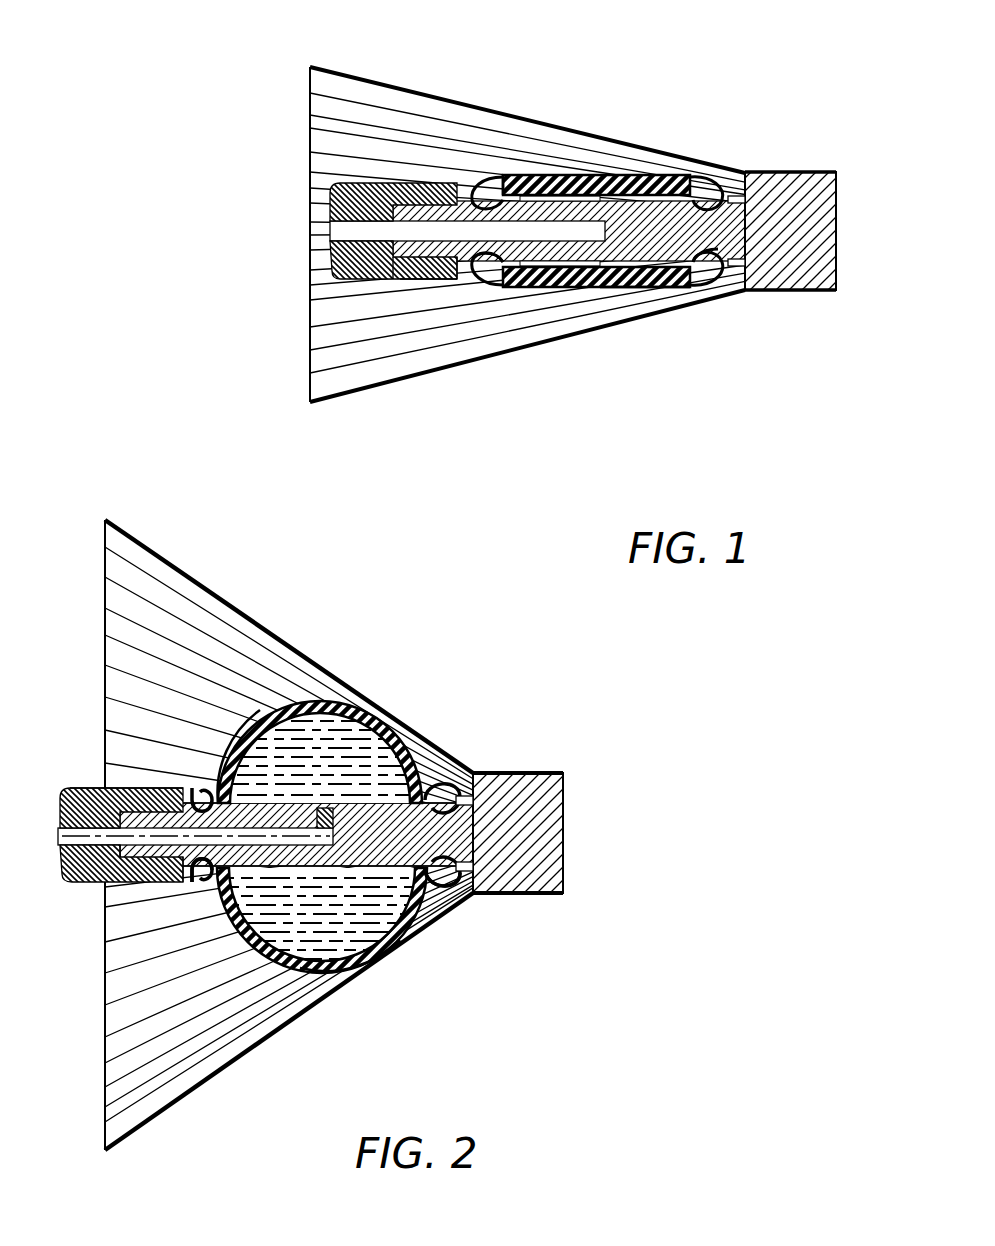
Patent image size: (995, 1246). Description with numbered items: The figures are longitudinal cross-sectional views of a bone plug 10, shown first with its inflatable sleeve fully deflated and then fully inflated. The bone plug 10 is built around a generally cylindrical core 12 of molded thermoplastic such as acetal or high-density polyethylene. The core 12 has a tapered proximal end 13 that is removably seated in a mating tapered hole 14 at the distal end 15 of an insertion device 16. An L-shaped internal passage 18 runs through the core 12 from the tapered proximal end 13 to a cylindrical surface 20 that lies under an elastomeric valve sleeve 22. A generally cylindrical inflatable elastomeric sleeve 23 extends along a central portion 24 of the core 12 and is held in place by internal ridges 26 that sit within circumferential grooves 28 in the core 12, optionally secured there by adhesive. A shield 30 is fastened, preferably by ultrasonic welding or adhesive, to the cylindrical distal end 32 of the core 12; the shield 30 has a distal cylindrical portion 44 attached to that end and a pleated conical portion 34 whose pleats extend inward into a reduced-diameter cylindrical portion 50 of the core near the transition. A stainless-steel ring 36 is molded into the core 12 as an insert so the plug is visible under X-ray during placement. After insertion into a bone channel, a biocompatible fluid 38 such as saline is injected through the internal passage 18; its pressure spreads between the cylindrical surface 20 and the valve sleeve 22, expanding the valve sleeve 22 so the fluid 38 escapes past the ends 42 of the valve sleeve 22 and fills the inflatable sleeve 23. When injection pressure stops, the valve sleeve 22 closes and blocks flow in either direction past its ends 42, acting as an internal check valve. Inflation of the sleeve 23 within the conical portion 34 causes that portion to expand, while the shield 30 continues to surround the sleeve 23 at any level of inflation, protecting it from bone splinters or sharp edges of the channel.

In FIG. 1, the bone plug 10 is at (647, 412).
In FIG. 2, the bone plug 10 is at (414, 1052).
In FIG. 1, the core 12 is at (848, 218).
In FIG. 2, the core 12 is at (577, 822).
In FIG. 1, the tapered proximal end 13 is at (405, 280).
In FIG. 2, the tapered proximal end 13 is at (135, 883).
In FIG. 1, the tapered hole 14 is at (398, 183).
In FIG. 2, the tapered hole 14 is at (130, 790).
In FIG. 1, the distal end of insertion device 15 is at (465, 282).
In FIG. 2, the distal end of insertion device 15 is at (187, 885).
In FIG. 1, the insertion device 16 is at (433, 292).
In FIG. 2, the insertion device 16 is at (78, 784).
In FIG. 1, the internal passage 18 is at (585, 265).
In FIG. 2, the internal passage 18 is at (340, 975).
In FIG. 1, the cylindrical surface 20 is at (613, 176).
In FIG. 2, the cylindrical surface 20 is at (345, 715).
In FIG. 1, the elastomeric valve sleeve 22 is at (548, 266).
In FIG. 2, the elastomeric valve sleeve 22 is at (283, 950).
In FIG. 1, the inflatable elastomeric sleeve 23 is at (618, 288).
In FIG. 2, the inflatable elastomeric sleeve 23 is at (343, 982).
In FIG. 1, the central portion 24 is at (520, 176).
In FIG. 2, the central portion 24 is at (235, 790).
In FIG. 1, the internal ridges 26 is at (490, 286).
In FIG. 2, the internal ridges 26 is at (218, 866).
In FIG. 1, the grooves 28 is at (703, 288).
In FIG. 2, the grooves 28 is at (430, 872).
In FIG. 1, the shield 30 is at (580, 130).
In FIG. 2, the shield 30 is at (317, 663).
In FIG. 1, the cylindrical distal end 32 is at (840, 262).
In FIG. 2, the cylindrical distal end 32 is at (566, 862).
In FIG. 1, the conical portion 34 is at (412, 90).
In FIG. 2, the conical portion 34 is at (150, 548).
In FIG. 1, the stainless-steel ring 36 is at (752, 172).
In FIG. 2, the stainless-steel ring 36 is at (476, 773).
In FIG. 2, the biocompatible fluid 38 is at (330, 740).
In FIG. 1, the ends of valve sleeve 42 is at (541, 176).
In FIG. 2, the ends of valve sleeve 42 is at (270, 795).
In FIG. 1, the distal cylindrical portion 44 is at (755, 292).
In FIG. 2, the distal cylindrical portion 44 is at (513, 895).
In FIG. 1, the reduced-diameter cylindrical portion 50 is at (738, 268).
In FIG. 2, the reduced-diameter cylindrical portion 50 is at (470, 896).